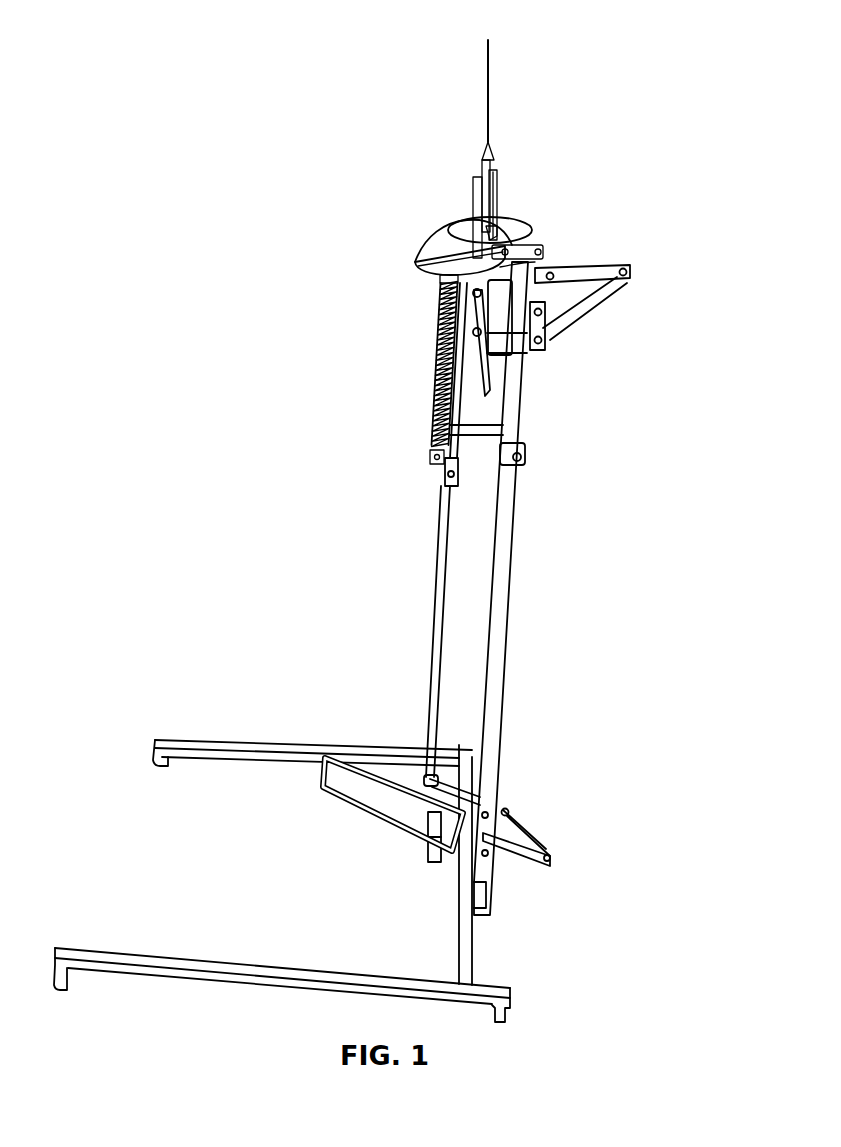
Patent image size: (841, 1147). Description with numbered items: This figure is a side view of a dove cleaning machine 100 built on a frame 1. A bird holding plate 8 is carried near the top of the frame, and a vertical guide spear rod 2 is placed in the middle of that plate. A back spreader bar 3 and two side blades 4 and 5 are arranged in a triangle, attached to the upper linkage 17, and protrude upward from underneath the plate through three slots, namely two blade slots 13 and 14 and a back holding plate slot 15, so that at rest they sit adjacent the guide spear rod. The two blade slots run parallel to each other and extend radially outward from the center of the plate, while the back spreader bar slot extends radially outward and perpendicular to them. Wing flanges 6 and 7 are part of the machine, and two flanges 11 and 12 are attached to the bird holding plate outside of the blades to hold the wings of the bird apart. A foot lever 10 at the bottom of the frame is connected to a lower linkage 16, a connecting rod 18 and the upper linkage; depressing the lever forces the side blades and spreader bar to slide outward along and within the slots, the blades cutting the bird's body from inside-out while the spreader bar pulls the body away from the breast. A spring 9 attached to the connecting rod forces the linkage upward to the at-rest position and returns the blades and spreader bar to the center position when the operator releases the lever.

The needle insertion device 100 is at (622, 87).
The frame 1 is at (262, 975).
The vertical guide spear rod 2 is at (488, 112).
The back spreader bar 3 is at (495, 197).
The side blade 4 is at (477, 193).
The side blade 5 is at (487, 173).
The wing flange 6 is at (467, 243).
The wing flange 7 is at (497, 177).
The bird holding plate 8 is at (437, 256).
The spring 9 is at (432, 378).
The foot lever 10 is at (320, 790).
The flange 11 is at (440, 300).
The flange 12 is at (517, 227).
The blade slot 13 is at (430, 270).
The blade slot 14 is at (491, 232).
The back holding plate slot 15 is at (520, 242).
The lower linkage 16 is at (533, 830).
The upper linkage 17 is at (567, 318).
The connecting rod 18 is at (437, 605).